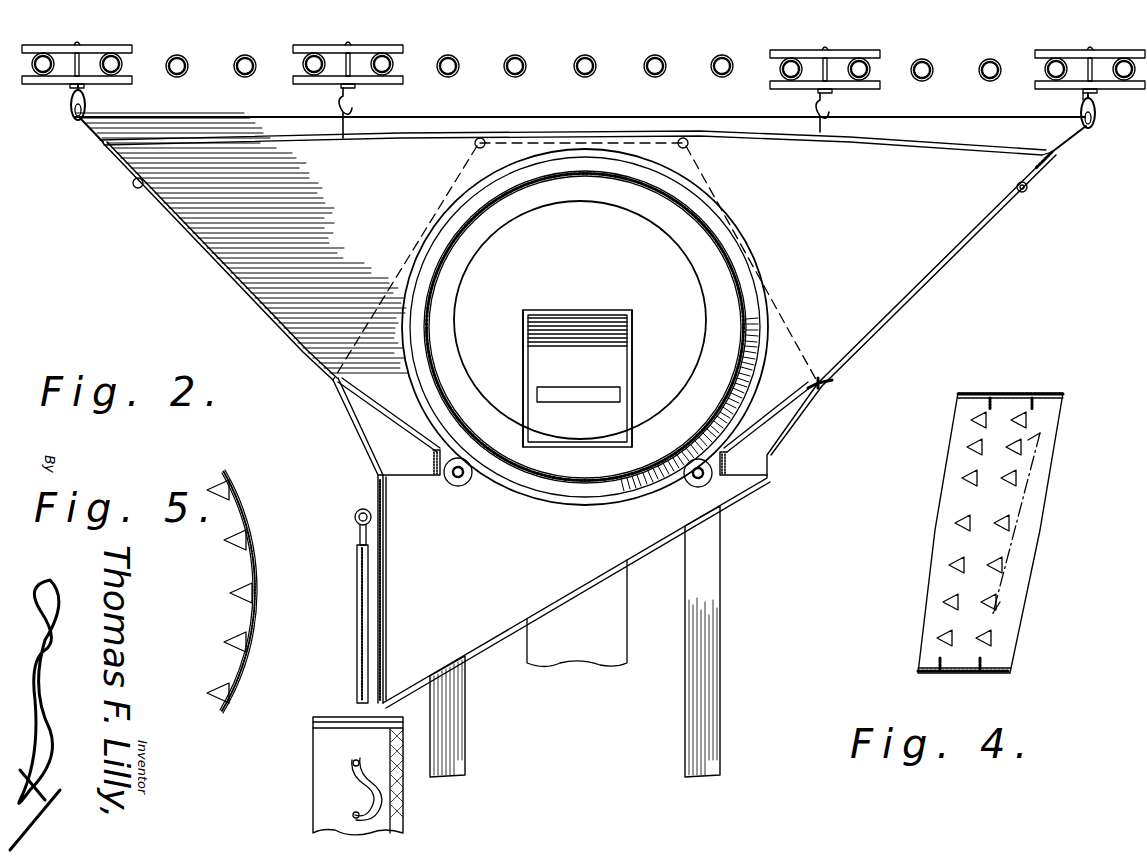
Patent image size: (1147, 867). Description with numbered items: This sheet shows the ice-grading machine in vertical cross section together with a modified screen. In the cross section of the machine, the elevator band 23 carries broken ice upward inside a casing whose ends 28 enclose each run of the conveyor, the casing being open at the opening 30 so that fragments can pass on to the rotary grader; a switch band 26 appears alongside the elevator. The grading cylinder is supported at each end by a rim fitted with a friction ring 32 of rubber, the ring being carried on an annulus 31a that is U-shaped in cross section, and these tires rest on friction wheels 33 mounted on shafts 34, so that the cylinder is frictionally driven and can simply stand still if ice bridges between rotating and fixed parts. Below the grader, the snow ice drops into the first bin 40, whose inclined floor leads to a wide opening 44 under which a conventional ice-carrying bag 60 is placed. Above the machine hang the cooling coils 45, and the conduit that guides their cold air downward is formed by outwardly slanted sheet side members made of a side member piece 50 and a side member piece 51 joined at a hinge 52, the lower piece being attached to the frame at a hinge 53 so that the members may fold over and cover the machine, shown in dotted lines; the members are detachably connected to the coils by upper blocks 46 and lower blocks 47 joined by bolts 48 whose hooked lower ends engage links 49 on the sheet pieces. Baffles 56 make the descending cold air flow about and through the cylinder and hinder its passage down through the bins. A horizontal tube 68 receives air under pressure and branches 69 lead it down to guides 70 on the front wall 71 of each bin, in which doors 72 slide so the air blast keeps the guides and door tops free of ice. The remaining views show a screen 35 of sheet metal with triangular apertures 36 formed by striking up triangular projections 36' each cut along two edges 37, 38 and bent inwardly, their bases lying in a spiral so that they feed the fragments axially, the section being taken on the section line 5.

In FIG. 2, the band 23 is at (612, 365).
In FIG. 2, the switch band 26 is at (605, 400).
In FIG. 2, the ends 28 is at (634, 374).
In FIG. 2, the opening 30 is at (580, 318).
In FIG. 2, the annulus 31a is at (694, 203).
In FIG. 2, the friction ring 32 is at (692, 186).
In FIG. 2, the friction wheels 33 is at (698, 488).
In FIG. 2, the shafts 34 is at (705, 482).
In FIG. 5, the screen 35 is at (248, 618).
In FIG. 4, the screen 35 is at (1062, 400).
In FIG. 5, the triangular apertures 36 is at (222, 585).
In FIG. 4, the triangular apertures 36 is at (947, 480).
In FIG. 5, the triangular projections 36' is at (205, 667).
In FIG. 4, the triangular projections 36' is at (1006, 651).
In FIG. 5, the edge 37 is at (240, 552).
In FIG. 5, the edge 38 is at (234, 540).
In FIG. 2, the first bin 40 is at (493, 645).
In FIG. 2, the wide opening 44 is at (379, 652).
In FIG. 2, the cooling coils 45 is at (580, 78).
In FIG. 2, the upper blocks 46 is at (1040, 55).
In FIG. 2, the lower blocks 47 is at (1058, 86).
In FIG. 2, the bolts 48 is at (800, 84).
In FIG. 2, the links 49 is at (1097, 130).
In FIG. 2, the side member piece 50 is at (1040, 172).
In FIG. 2, the side member piece 51 is at (955, 253).
In FIG. 2, the hinge 52 is at (1027, 192).
In FIG. 2, the hinge 53 is at (823, 389).
In FIG. 2, the baffles 56 is at (740, 435).
In FIG. 2, the ice-carrying bag 60 is at (325, 795).
In FIG. 2, the horizontal tube 68 is at (356, 514).
In FIG. 2, the branches 69 is at (360, 536).
In FIG. 2, the guides 70 is at (358, 602).
In FIG. 2, the front wall 71 is at (386, 566).
In FIG. 2, the doors 72 is at (360, 570).
In FIG. 4, the section line 5 is at (1023, 525).